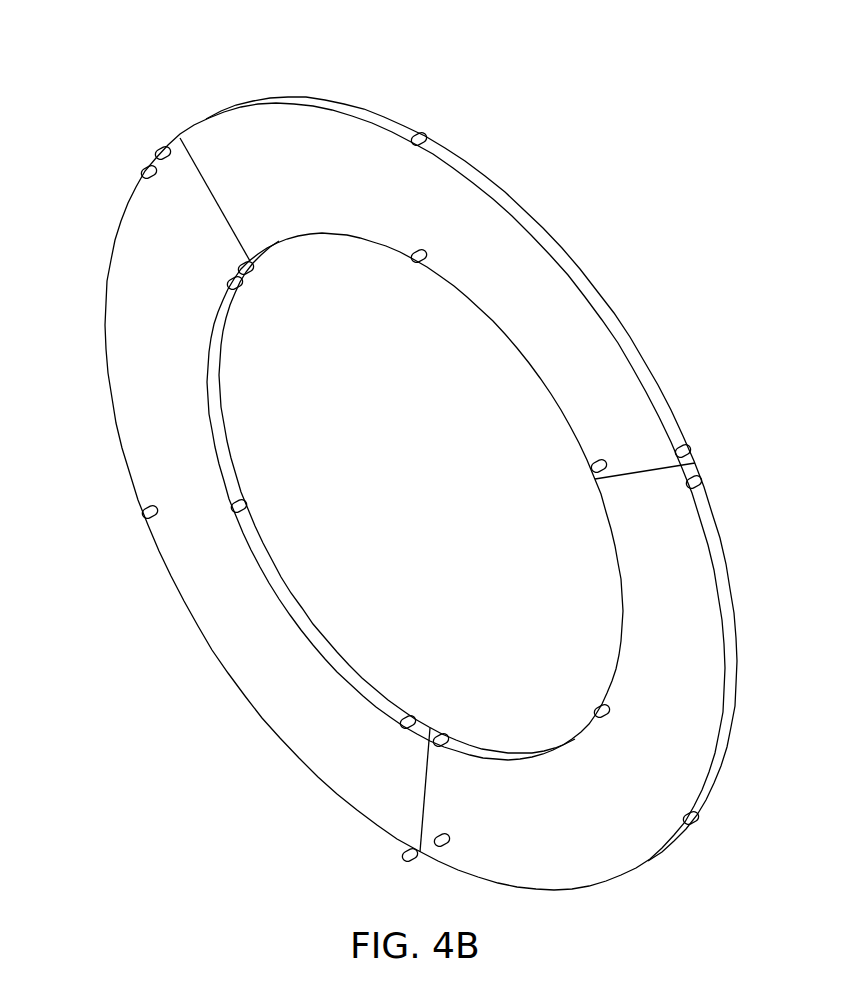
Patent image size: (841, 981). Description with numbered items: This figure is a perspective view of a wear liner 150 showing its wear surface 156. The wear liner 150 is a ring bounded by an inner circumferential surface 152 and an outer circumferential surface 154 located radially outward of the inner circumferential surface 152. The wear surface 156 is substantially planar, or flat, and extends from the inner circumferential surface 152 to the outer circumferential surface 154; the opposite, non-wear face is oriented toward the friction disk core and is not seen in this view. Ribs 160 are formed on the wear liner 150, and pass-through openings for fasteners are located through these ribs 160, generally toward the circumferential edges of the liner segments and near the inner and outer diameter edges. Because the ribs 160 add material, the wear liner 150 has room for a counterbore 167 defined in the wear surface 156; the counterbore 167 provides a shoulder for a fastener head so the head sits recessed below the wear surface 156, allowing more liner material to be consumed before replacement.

The wear liner 150 is at (98, 97).
The inner circumferential surface 152 is at (341, 662).
The outer circumferential surface 154 is at (362, 117).
The wear surface 156 is at (176, 357).
The rib 160 is at (457, 156).
The counterbore 167 is at (238, 247).